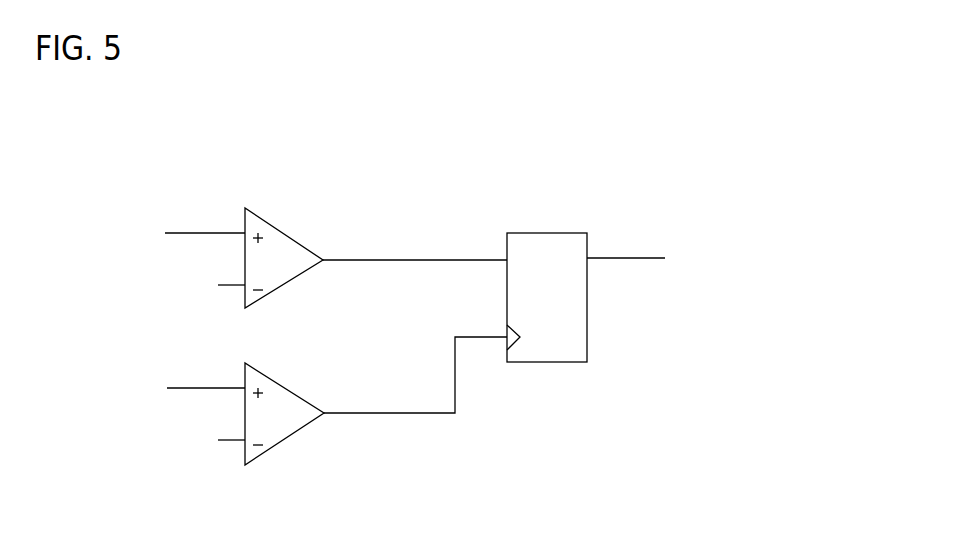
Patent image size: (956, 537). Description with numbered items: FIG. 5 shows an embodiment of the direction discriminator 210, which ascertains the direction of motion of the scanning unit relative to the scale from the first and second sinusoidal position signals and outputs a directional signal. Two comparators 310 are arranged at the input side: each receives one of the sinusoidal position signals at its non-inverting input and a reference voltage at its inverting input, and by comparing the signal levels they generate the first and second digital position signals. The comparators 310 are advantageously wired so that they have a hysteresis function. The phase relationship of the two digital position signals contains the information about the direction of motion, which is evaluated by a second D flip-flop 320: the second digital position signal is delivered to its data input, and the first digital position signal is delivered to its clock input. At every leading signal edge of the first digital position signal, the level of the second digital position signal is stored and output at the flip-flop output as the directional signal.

The direction discriminator 210 is at (733, 130).
The comparators 310 is at (323, 263).
The second D flip-flop 320 is at (545, 233).